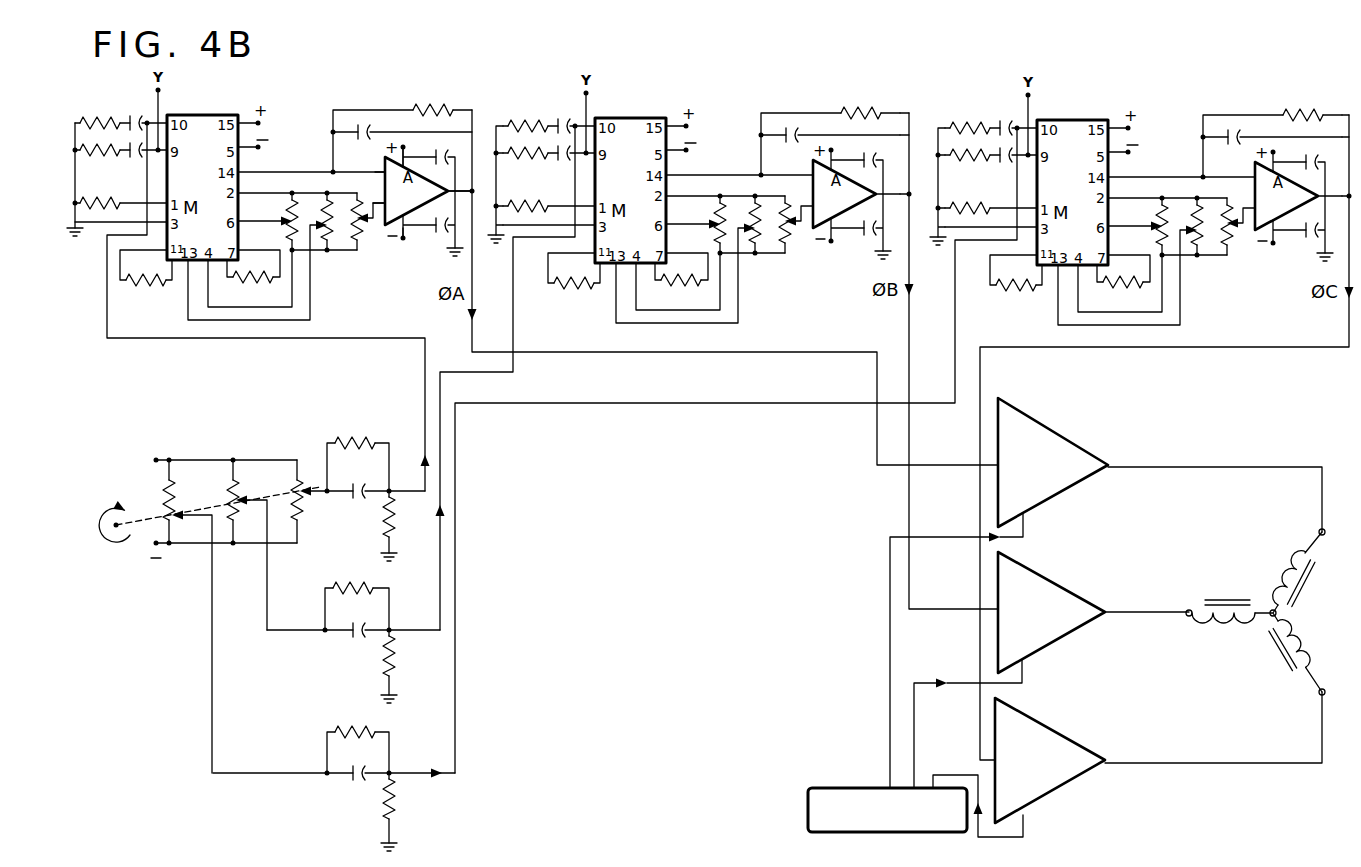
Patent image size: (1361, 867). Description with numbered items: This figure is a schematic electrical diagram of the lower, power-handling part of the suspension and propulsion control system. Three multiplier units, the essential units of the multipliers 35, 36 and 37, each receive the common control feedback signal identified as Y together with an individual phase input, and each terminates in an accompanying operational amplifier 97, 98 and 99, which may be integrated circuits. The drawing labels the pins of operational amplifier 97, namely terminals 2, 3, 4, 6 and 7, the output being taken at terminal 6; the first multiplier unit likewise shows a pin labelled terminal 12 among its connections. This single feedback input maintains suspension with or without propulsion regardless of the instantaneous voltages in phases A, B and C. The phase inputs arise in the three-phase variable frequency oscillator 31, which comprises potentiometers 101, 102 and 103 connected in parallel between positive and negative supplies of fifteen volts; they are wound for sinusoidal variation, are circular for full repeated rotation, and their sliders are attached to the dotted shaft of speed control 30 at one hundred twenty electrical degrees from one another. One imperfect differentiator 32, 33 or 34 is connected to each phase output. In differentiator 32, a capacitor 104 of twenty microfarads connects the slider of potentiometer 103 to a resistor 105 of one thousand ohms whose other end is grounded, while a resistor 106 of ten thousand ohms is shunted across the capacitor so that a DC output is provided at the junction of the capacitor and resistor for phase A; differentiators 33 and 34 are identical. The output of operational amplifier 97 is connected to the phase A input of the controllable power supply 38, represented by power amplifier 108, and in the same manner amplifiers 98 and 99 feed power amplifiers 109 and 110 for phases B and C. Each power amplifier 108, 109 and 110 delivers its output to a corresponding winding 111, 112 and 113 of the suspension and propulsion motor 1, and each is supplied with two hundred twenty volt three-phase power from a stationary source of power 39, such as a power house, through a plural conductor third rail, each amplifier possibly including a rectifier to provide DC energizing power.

The suspension and propulsion motor 1 is at (1224, 602).
The operational amplifier input terminal 2 is at (384, 172).
The operational amplifier input terminal 3 is at (385, 208).
The operational amplifier terminal 4 is at (405, 230).
The output terminal 6 is at (448, 196).
The operational amplifier terminal 7 is at (406, 162).
The resistor 12 is at (170, 267).
The speed control 30 is at (121, 511).
The three-phase variable frequency oscillator 31 is at (221, 601).
The imperfect differentiator 32 is at (378, 489).
The imperfect differentiator 33 is at (378, 643).
The imperfect differentiator 34 is at (378, 786).
The multiplier 35 is at (226, 194).
The multiplier 36 is at (732, 120).
The multiplier 37 is at (1177, 122).
The controllable power supply 38 is at (1097, 502).
The stationary source of power 39 is at (838, 788).
The operational amplifier 97 is at (403, 180).
The operational amplifier 98 is at (835, 183).
The operational amplifier 99 is at (1276, 185).
The potentiometer 101 is at (172, 484).
The potentiometer 102 is at (237, 477).
The potentiometer 103 is at (299, 532).
The capacitor 104 is at (360, 489).
The resistor 105 is at (380, 506).
The resistor 106 is at (350, 440).
The power amplifier 108 is at (999, 593).
The power amplifier 109 is at (1009, 670).
The power amplifier 110 is at (1019, 767).
The winding 111 is at (1294, 556).
The winding 112 is at (1216, 629).
The winding 113 is at (1283, 669).